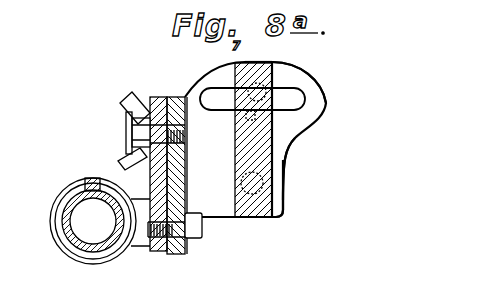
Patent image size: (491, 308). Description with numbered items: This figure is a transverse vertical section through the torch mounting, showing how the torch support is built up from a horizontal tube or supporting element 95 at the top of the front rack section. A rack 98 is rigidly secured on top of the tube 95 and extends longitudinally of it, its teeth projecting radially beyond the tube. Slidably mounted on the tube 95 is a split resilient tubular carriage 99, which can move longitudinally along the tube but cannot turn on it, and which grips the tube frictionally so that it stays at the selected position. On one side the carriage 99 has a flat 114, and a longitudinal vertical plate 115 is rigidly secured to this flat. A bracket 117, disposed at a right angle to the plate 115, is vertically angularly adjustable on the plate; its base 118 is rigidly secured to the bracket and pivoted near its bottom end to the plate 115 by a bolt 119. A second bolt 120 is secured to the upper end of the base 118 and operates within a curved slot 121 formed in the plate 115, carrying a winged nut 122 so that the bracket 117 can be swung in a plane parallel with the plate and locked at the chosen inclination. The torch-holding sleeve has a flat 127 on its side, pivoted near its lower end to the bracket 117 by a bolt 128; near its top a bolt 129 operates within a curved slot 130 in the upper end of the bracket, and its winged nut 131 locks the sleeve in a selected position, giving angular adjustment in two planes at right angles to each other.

The horizontal tube or supporting element 95 is at (78, 222).
The rack 98 is at (86, 184).
The split resilient circumferentially adjustable tubular carriage 99 is at (68, 250).
The flat 114 is at (144, 242).
The longitudinal vertical plate 115 is at (130, 152).
The bracket 117 is at (290, 153).
The base 118 is at (186, 207).
The bolt 119 is at (200, 232).
The bolt 120 is at (157, 135).
The curved slot 121 is at (125, 116).
The winged nut 122 is at (140, 100).
The flat 127 is at (280, 131).
The bolt 128 is at (283, 172).
The bolt 129 is at (296, 76).
The curved slot 130 is at (306, 100).
The winged nut 131 is at (274, 64).